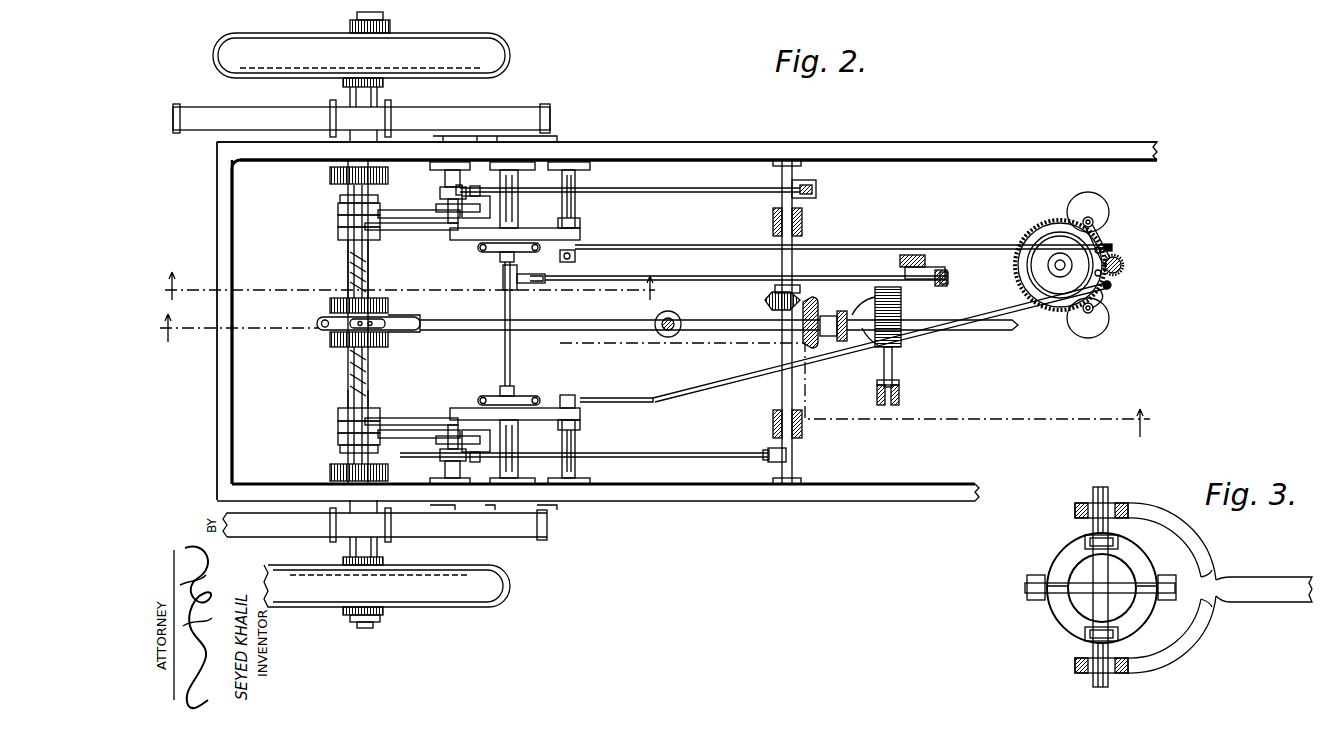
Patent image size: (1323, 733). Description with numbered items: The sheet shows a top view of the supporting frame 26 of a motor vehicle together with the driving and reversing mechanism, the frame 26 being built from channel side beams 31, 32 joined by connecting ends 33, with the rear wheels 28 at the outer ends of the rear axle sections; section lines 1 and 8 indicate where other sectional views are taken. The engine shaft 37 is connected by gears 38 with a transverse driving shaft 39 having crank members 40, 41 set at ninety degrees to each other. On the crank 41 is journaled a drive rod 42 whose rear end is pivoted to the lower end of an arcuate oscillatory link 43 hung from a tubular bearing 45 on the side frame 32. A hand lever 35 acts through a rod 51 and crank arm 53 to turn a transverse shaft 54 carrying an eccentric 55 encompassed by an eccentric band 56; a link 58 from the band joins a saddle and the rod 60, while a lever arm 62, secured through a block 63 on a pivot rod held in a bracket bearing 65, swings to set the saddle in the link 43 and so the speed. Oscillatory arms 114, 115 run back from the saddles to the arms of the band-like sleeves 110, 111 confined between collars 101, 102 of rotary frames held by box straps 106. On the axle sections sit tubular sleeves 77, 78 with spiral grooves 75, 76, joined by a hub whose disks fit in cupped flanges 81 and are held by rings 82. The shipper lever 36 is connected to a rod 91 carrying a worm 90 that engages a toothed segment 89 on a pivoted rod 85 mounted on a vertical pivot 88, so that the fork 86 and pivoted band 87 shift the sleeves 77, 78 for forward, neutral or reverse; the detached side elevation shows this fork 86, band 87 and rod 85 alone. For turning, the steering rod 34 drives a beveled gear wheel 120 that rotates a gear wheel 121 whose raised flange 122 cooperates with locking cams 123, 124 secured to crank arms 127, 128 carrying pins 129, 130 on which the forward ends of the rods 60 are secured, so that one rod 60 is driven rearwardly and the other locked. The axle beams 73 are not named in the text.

In FIG. 2, the section line 1- 1 is at (654, 375).
In FIG. 2, the section line 8- 8 is at (413, 286).
In FIG. 2, the supporting frame 26 is at (216, 204).
In FIG. 2, the rear wheels 28 is at (495, 28).
In FIG. 2, the channel side beam 31 is at (790, 495).
In FIG. 2, the channel side beam 32 is at (722, 155).
In FIG. 2, the connecting ends 33 is at (217, 405).
In FIG. 2, the steering rod 34 is at (1115, 275).
In FIG. 2, the hand-lever 35 is at (922, 255).
In FIG. 2, the manually operative lever 36 is at (900, 398).
In FIG. 2, the engine shaft 37 is at (1015, 332).
In FIG. 2, the gears 38 is at (806, 302).
In FIG. 2, the transverse driving shaft 39 is at (782, 398).
In FIG. 2, the crank member 40 is at (768, 458).
In FIG. 2, the crank member 41 is at (817, 190).
In FIG. 2, the drive rod 42 is at (715, 192).
In FIG. 2, the oscillatory link 43 is at (463, 324).
In FIG. 2, the tubular bearing 45 is at (445, 180).
In FIG. 2, the rod 51 is at (665, 290).
In FIG. 2, the crank-arm 53 is at (523, 285).
In FIG. 2, the transverse shaft 54 is at (505, 350).
In FIG. 2, the eccentric 55 is at (498, 258).
In FIG. 2, the eccentric band 56 is at (478, 248).
In FIG. 2, the link 58 is at (572, 262).
In FIG. 2, the rod 60 is at (825, 245).
In FIG. 2, the lever arm 62 is at (581, 234).
In FIG. 2, the block 63 is at (580, 224).
In FIG. 2, the bracket bearing 65 is at (578, 186).
In FIG. 2, the axle beam 73 is at (361, 321).
In FIG. 2, the spiral groove 75 is at (348, 400).
In FIG. 2, the spiral groove 76 is at (350, 264).
In FIG. 2, the tubular sleeve 77 is at (369, 372).
In FIG. 2, the tubular sleeve 78 is at (370, 262).
In FIG. 2, the cupped flange 81 is at (388, 308).
In FIG. 2, the ring 82 is at (327, 320).
In FIG. 2, the pivoted rod 85 is at (565, 332).
In FIG. 3, the pivoted rod 85 is at (1256, 598).
In FIG. 2, the fork 86 is at (342, 345).
In FIG. 3, the fork 86 is at (1150, 668).
In FIG. 3, the pivoted band 87 is at (1060, 602).
In FIG. 2, the vertical pivot 88 is at (667, 338).
In FIG. 2, the toothed segment 89 is at (858, 350).
In FIG. 2, the worm 90 is at (902, 308).
In FIG. 2, the rod 91 is at (893, 366).
In FIG. 2, the collar 101 is at (345, 238).
In FIG. 2, the collar 102 is at (343, 200).
In FIG. 2, the box-strap 106 is at (330, 176).
In FIG. 2, the oscillatory sleeve 110 is at (345, 224).
In FIG. 2, the oscillatory sleeve 111 is at (345, 212).
In FIG. 2, the oscillatory arm 114 is at (395, 230).
In FIG. 2, the oscillatory arm 115 is at (438, 200).
In FIG. 2, the beveled gear wheel 120 is at (1124, 265).
In FIG. 2, the gear wheel 121 is at (1022, 243).
In FIG. 2, the raised flange 122 is at (1047, 228).
In FIG. 2, the locking cam 123 is at (1094, 338).
In FIG. 2, the locking cam 124 is at (1094, 207).
In FIG. 2, the crank arm 127 is at (1106, 298).
In FIG. 2, the crank arm 128 is at (1110, 240).
In FIG. 2, the pin 129 is at (1112, 288).
In FIG. 2, the pin 130 is at (1114, 249).